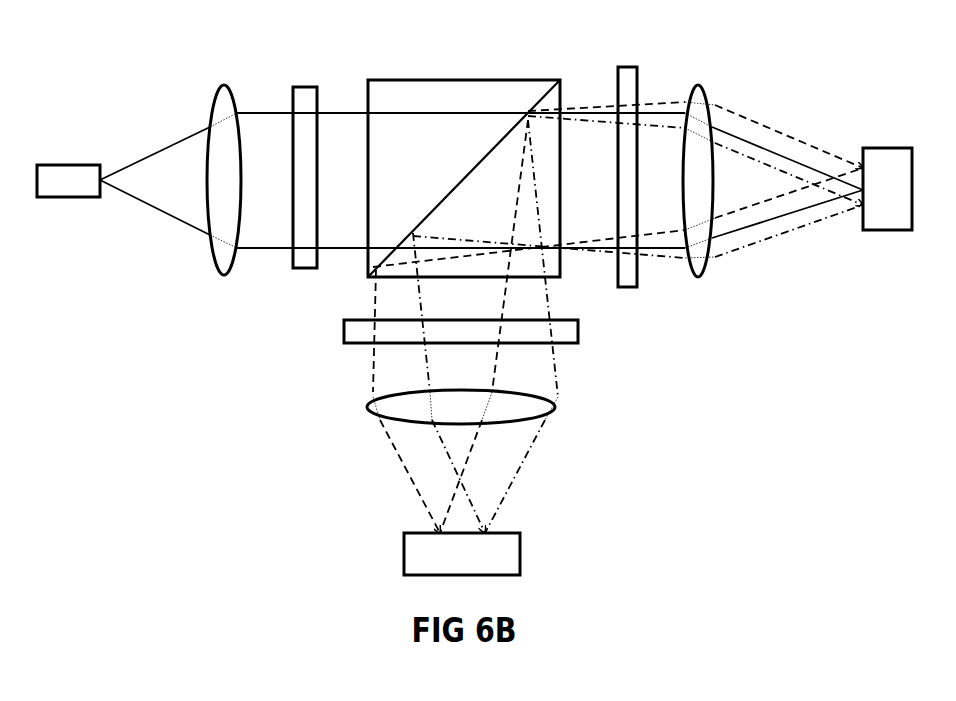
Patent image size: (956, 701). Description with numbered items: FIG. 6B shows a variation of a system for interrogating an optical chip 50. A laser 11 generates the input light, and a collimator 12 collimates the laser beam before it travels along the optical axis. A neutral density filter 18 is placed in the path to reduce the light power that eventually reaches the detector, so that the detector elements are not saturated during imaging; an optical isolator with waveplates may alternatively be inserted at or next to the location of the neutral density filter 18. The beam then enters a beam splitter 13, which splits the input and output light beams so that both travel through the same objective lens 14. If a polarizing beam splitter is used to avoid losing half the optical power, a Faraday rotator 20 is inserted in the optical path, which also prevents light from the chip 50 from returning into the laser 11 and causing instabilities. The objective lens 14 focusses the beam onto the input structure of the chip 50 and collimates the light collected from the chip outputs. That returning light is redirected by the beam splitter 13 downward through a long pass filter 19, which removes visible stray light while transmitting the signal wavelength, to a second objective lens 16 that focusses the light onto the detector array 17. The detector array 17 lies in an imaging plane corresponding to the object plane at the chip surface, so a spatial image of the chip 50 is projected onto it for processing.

The laser 11 is at (82, 152).
The collimator 12 is at (235, 70).
The neutral density filter 18 is at (322, 67).
The beam splitter 13 is at (472, 68).
The Faraday rotator 20 is at (644, 65).
The objective lens 14 is at (709, 62).
The optical chip 50 is at (902, 135).
The long pass filter 19 is at (621, 347).
The second objective lens 16 is at (602, 432).
The detector array 17 is at (474, 565).